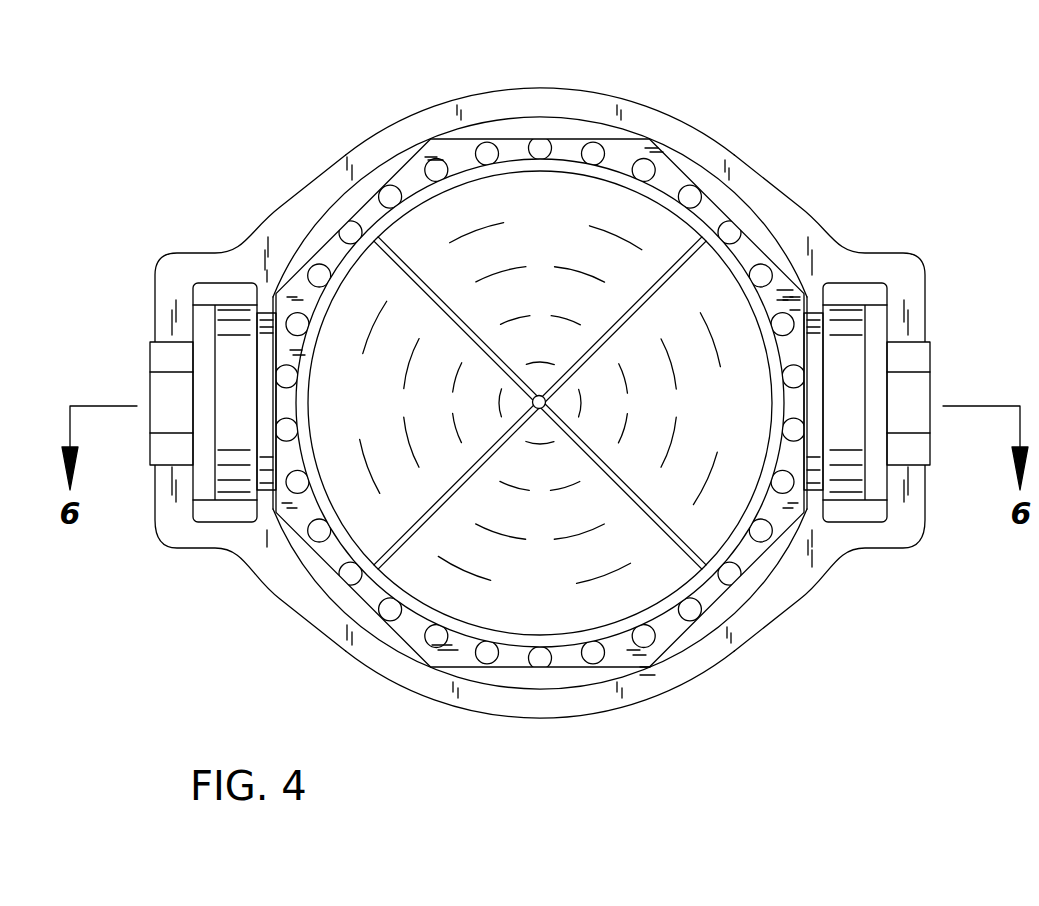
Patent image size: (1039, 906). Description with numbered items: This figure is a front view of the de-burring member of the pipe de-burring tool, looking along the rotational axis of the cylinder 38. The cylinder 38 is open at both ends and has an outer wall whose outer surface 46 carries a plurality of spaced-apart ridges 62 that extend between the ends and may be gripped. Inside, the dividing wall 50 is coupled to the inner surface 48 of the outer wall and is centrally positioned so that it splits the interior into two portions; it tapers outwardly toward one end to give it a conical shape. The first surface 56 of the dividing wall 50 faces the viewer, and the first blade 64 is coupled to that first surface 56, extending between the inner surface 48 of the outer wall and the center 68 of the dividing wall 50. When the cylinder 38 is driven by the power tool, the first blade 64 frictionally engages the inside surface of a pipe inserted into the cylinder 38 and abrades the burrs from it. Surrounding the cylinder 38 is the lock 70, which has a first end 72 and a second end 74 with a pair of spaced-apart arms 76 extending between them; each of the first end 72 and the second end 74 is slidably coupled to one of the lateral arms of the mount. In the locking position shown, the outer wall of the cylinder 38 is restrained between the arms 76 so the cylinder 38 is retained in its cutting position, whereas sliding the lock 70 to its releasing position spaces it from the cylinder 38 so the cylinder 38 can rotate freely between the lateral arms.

The cylinder 38 is at (720, 573).
The outer surface 46 is at (682, 612).
The inner surface 48 is at (552, 630).
The dividing wall 50 is at (608, 232).
The first surface 56 is at (528, 206).
The ridges 62 is at (765, 270).
The first blade 64 is at (401, 256).
The center 68 is at (537, 444).
The lock 70 is at (163, 254).
The first end 72 is at (152, 307).
The second end 74 is at (925, 312).
The arms 76 is at (488, 93).